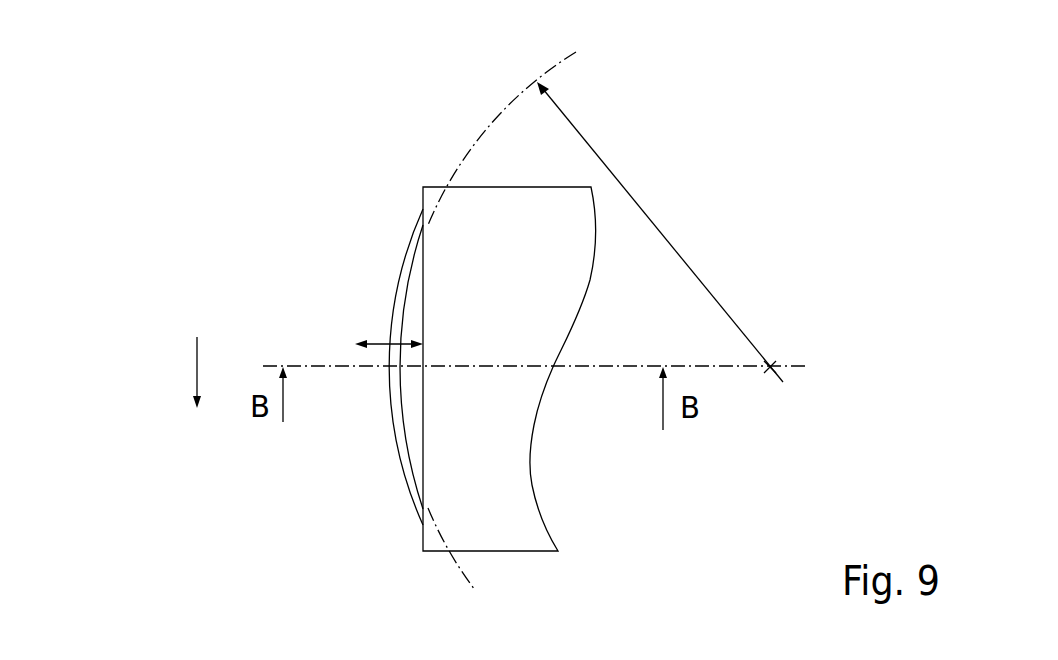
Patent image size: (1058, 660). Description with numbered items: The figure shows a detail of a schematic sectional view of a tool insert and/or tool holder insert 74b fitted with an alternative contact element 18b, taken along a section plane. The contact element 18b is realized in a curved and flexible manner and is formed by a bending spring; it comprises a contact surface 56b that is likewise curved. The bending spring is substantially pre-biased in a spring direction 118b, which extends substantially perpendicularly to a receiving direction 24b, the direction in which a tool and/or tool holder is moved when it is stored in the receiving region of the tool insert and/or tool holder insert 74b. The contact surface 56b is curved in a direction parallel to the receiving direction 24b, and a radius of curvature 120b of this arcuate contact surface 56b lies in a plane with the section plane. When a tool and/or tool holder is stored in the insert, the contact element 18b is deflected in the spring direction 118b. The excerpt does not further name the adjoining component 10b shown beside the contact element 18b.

The lens body 10b is at (507, 486).
The contact element 18b is at (405, 265).
The contact surface 56b is at (400, 470).
The tool insert and/or tool holder insert 74b is at (495, 168).
The radius of curvature 120b is at (653, 227).
The spring direction 118b is at (372, 344).
The receiving direction 24b is at (197, 372).